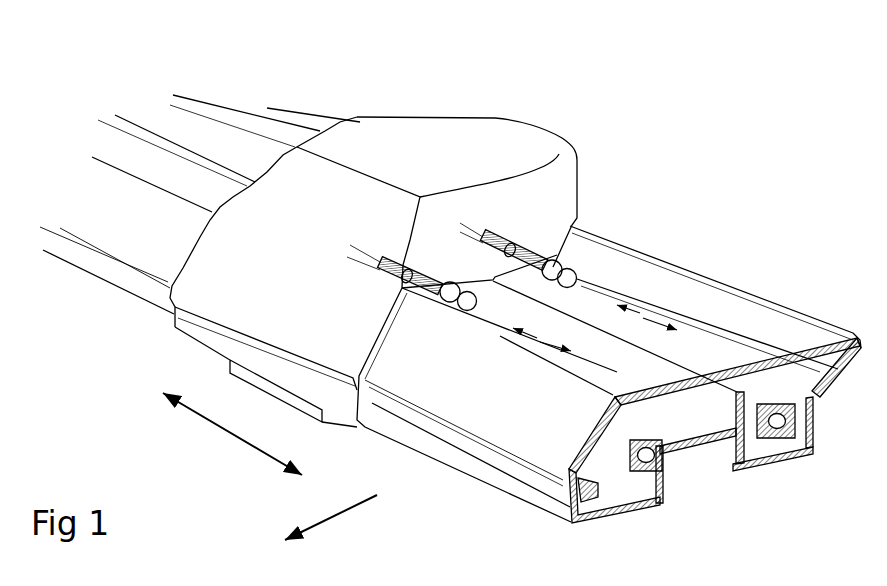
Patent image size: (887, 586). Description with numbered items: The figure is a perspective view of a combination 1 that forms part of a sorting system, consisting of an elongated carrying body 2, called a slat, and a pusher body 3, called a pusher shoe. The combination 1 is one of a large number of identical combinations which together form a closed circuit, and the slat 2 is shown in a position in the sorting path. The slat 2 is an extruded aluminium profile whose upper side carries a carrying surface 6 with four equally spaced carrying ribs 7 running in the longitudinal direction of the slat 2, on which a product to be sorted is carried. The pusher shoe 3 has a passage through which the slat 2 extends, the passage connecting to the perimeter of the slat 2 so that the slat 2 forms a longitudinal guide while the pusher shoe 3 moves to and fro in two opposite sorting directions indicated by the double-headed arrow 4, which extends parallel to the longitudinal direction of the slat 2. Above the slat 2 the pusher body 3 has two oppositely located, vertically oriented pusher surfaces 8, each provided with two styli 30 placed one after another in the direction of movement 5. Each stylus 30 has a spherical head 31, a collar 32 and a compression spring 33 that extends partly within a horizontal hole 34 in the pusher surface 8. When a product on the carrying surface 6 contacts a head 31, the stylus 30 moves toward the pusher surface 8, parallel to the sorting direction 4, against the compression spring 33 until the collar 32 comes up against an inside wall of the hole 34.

The combination 1 is at (706, 121).
The elongated carrying body 2 is at (716, 312).
The pusher body 3 is at (273, 279).
The double-headed arrow 4 is at (240, 435).
The direction of movement 5 is at (300, 530).
The carrying surface 6 is at (121, 141).
The carrying ribs 7 is at (808, 344).
The pusher surfaces 8 is at (260, 167).
The stylus 30 is at (585, 250).
The spherical head 31 is at (473, 303).
The collar 32 is at (446, 296).
The compression spring 33 is at (410, 286).
The horizontal hole 34 is at (530, 252).